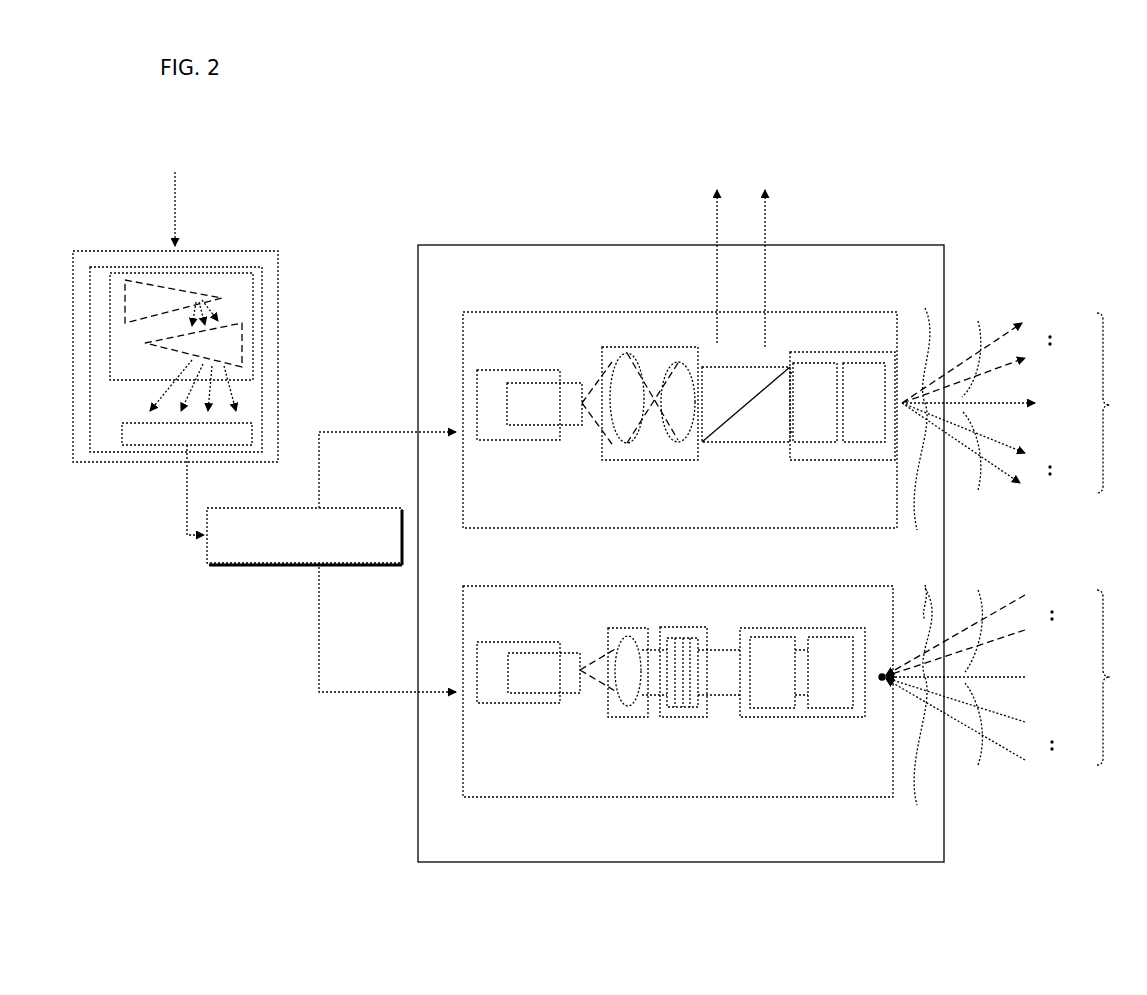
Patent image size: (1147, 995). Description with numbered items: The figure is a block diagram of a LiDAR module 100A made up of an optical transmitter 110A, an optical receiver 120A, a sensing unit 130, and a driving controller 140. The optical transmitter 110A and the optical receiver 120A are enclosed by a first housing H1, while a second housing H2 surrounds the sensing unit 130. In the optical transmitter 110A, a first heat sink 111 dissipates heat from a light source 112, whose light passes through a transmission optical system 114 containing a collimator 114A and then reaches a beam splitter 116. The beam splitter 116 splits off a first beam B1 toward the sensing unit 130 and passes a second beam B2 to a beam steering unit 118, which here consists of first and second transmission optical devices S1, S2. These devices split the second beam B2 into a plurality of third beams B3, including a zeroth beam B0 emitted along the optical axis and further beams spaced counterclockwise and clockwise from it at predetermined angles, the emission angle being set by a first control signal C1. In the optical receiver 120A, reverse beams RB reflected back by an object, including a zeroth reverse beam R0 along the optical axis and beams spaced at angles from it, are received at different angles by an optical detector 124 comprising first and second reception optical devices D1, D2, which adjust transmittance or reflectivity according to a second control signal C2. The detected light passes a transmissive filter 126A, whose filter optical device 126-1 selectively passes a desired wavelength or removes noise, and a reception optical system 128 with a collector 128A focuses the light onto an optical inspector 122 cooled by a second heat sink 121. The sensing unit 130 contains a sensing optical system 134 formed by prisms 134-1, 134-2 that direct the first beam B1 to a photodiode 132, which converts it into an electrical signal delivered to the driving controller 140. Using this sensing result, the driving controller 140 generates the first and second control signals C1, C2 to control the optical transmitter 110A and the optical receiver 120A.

The LiDAR module 100A is at (1000, 188).
The optical transmitter 110A is at (836, 312).
The first heat sink 111 is at (520, 440).
The light source 112 is at (571, 383).
The transmission optical system 114 is at (651, 460).
The collimator 114A is at (680, 350).
The beam splitter 116 is at (740, 442).
The beam steering unit 118 is at (840, 460).
The first transmission optical device S1 is at (815, 402).
The second transmission optical device S2 is at (864, 402).
The optical receiver 120A is at (775, 797).
The second heat sink 121 is at (520, 703).
The optical inspector 122 is at (568, 653).
The optical detector 124 is at (810, 717).
The first reception optical device D1 is at (772, 672).
The second reception optical device D2 is at (830, 672).
The transmissive filter 126A is at (683, 717).
The filter optical device 126-1 is at (690, 638).
The reception optical system 128 is at (628, 717).
The collector 128A is at (628, 628).
The sensing unit 130 is at (262, 300).
The photodiode 132 is at (250, 432).
The sensing optical system 134 is at (253, 352).
The prism 134-1 is at (185, 293).
The prism 134-2 is at (223, 323).
The driving controller 140 is at (233, 563).
The first housing H1 is at (879, 245).
The second housing H2 is at (278, 268).
The first beam B1 is at (173, 211).
The second beam B2 is at (779, 374).
The third beams B3 is at (1116, 403).
The 0th beam B0 is at (982, 406).
The first control signal C1 is at (387, 458).
The second control signal C2 is at (387, 640).
The reverse beams RB is at (1117, 677).
The 0th reverse beam R0 is at (974, 678).